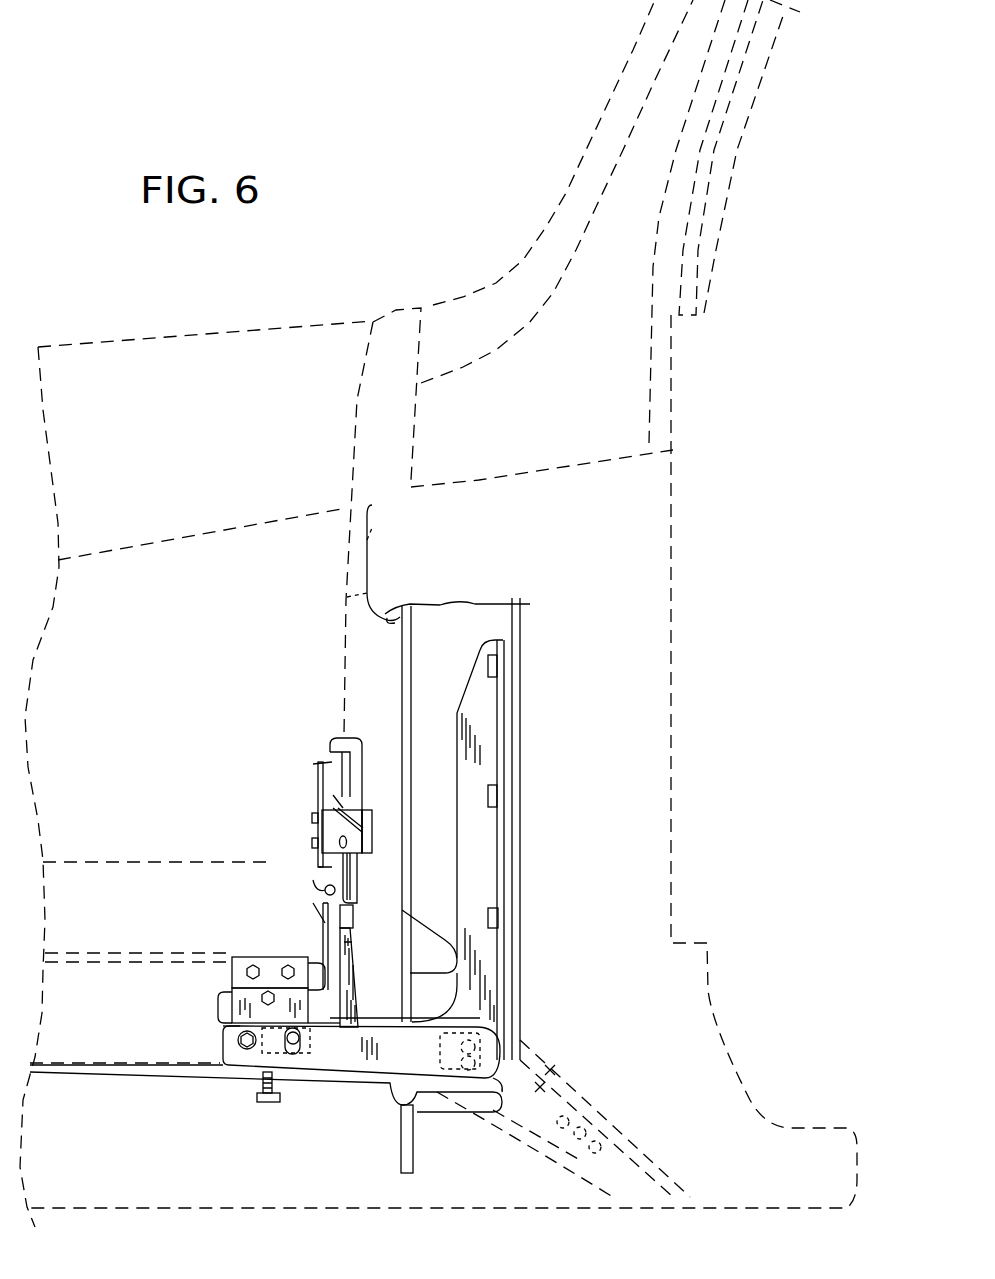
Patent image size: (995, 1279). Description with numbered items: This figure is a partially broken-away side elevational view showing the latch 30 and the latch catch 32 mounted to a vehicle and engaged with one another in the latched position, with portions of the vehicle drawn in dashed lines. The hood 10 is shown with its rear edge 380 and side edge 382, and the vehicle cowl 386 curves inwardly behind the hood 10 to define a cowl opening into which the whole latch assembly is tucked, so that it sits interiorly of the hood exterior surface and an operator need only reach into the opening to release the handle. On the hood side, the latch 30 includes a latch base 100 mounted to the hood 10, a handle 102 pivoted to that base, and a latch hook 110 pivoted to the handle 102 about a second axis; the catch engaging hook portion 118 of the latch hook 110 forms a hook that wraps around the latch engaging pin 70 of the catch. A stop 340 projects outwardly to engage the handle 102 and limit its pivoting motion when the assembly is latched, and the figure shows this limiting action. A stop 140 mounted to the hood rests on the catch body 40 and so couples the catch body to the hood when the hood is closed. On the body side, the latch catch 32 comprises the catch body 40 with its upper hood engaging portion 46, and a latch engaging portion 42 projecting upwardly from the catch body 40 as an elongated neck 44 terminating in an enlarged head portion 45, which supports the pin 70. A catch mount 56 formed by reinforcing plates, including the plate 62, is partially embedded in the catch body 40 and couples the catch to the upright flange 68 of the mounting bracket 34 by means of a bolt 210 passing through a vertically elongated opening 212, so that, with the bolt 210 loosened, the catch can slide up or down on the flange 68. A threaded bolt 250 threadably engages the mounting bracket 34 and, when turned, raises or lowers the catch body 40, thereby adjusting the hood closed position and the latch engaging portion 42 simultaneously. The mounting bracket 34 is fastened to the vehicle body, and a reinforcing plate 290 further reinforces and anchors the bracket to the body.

The hood 10 is at (192, 325).
The latch 30 is at (302, 753).
The latch catch 32 is at (313, 952).
The mounting bracket 34 is at (401, 1056).
The catch body 40 is at (317, 1010).
The latch engaging portion 42 is at (362, 976).
The elongated neck 44 is at (348, 940).
The head portion 45 is at (313, 880).
The hood engaging portion 46 is at (230, 995).
The catch mount 56 is at (217, 1043).
The second plate 62 is at (233, 1052).
The upright flange 68 is at (222, 1032).
The latch engaging pin 70 is at (325, 893).
The latch base 100 is at (333, 818).
The handle 102 is at (350, 737).
The latch hook 110 is at (360, 874).
The catch engaging hook portion 118 is at (353, 905).
The stop 140 is at (238, 970).
The bolt 210 is at (247, 1052).
The elongated fastener receiving opening 212 is at (293, 1052).
The threaded bolt 250 is at (270, 1103).
The reinforcing plate 290 is at (553, 1070).
The stop 340 is at (337, 797).
The rear edge 380 is at (396, 308).
The side edge 382 is at (383, 577).
The cowl 386 is at (370, 533).